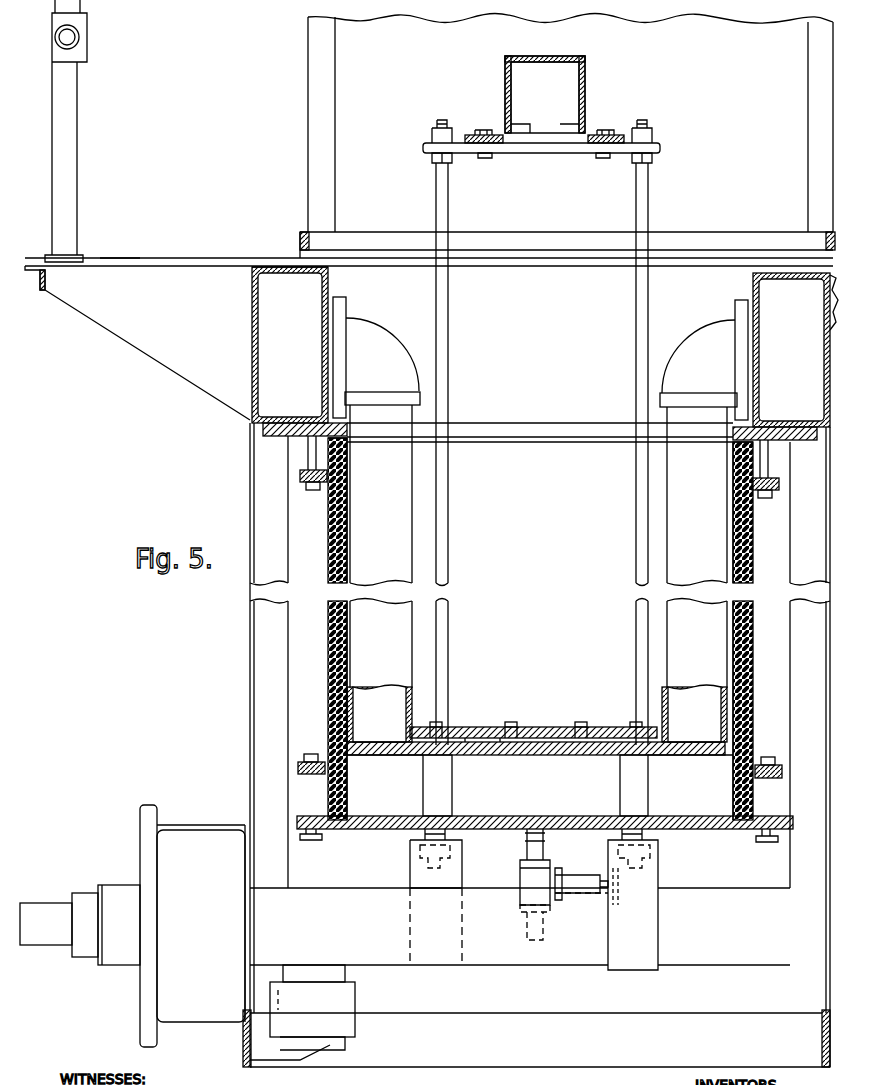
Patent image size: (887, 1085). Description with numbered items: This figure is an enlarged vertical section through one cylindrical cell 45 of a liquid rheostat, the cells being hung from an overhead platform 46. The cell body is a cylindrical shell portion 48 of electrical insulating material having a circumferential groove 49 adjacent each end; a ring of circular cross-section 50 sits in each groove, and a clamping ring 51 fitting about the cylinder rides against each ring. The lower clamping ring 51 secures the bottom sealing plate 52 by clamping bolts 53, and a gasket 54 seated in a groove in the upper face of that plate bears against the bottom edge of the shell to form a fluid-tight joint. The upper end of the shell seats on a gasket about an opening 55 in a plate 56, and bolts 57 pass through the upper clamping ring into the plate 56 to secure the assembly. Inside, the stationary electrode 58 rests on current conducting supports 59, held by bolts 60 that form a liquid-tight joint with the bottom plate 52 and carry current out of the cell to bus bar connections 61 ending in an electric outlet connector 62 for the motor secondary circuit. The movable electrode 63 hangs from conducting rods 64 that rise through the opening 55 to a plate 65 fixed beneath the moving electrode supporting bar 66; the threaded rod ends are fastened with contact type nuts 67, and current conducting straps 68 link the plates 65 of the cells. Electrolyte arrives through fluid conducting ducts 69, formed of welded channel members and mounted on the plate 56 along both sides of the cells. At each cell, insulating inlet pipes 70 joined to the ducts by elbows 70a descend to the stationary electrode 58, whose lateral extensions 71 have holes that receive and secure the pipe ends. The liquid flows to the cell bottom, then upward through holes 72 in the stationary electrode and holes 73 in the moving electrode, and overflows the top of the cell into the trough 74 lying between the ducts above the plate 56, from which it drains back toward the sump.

The cylindrical cell 45 is at (328, 608).
The overhead platform 46 is at (253, 300).
The cylindrical shell portion 48 is at (328, 677).
The circumferential groove 49 is at (347, 472).
The ring of circular cross-section 50 is at (347, 457).
The clamping ring 51 is at (305, 484).
The bottom sealing plate 52 is at (378, 828).
The clamping bolt 53 is at (304, 800).
The gasket 54 is at (339, 830).
The opening 55 is at (497, 428).
The plate 56 is at (268, 433).
The bolt 57 is at (308, 453).
The stationary electrode 58 is at (548, 756).
The current conducting support 59 is at (447, 794).
The bolt 60 is at (452, 857).
The bus bar connection 61 is at (524, 965).
The electric outlet connector 62 is at (160, 992).
The movable electrode 63 is at (522, 732).
The conducting rod 64 is at (637, 497).
The plate 65 is at (662, 149).
The moving electrode supporting bar 66 is at (586, 90).
The contact type nut 67 is at (432, 134).
The current conducting strap 68 is at (478, 134).
The fluid conducting duct 69 is at (262, 338).
The inlet pipe 70 is at (400, 549).
The elbow 70a is at (375, 338).
The lateral extension 71 is at (354, 752).
The hole 72 is at (515, 754).
The hole 73 is at (574, 719).
The trough 74 is at (584, 402).